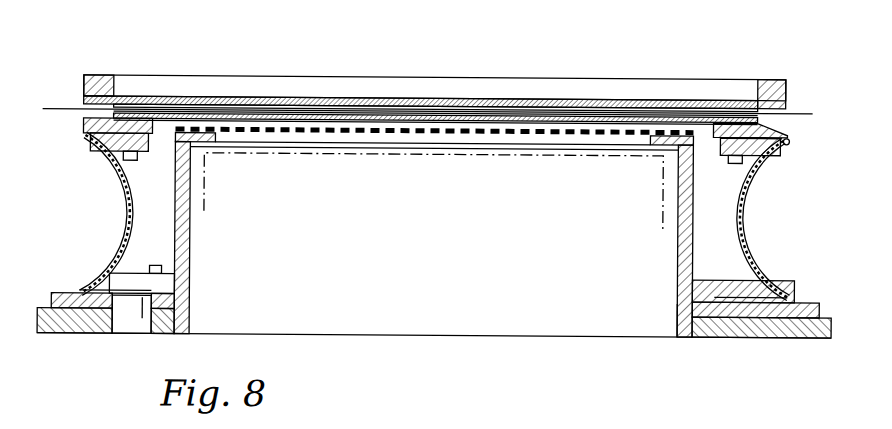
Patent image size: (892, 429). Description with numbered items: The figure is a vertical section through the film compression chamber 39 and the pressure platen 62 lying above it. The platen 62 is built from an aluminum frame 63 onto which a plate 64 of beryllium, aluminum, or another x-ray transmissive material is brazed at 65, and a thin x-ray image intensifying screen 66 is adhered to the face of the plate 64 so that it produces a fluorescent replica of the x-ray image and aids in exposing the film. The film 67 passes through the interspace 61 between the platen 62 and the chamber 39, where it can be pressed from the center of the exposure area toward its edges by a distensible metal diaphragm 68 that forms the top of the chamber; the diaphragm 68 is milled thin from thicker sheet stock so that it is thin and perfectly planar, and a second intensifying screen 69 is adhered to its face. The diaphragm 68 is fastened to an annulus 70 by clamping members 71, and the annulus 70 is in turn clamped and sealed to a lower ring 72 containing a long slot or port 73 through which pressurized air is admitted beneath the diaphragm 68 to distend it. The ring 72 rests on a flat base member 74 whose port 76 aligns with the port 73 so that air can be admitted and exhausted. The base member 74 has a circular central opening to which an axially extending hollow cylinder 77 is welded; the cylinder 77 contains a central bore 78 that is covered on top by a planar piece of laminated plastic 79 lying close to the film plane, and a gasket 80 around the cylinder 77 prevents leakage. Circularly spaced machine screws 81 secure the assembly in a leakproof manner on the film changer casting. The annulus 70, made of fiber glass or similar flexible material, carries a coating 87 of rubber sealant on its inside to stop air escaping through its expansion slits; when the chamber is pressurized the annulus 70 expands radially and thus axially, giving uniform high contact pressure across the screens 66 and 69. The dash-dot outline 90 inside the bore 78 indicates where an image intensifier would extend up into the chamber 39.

The film compression chamber 39 is at (447, 360).
The interspace 61 is at (100, 112).
The pressure platen 62 is at (437, 90).
The aluminum frame 63 is at (103, 75).
The plate 64 is at (668, 101).
The braze 65 is at (787, 101).
The x-ray image intensifying screen 66 is at (727, 104).
The film 67 is at (58, 80).
The distensible metal diaphragm 68 is at (522, 120).
The intensifying screen 69 is at (623, 120).
The annulus 70 is at (790, 139).
The clamping members 71 is at (718, 152).
The lower ring 72 is at (800, 298).
The port 73 is at (140, 333).
The flat base member 74 is at (720, 330).
The port 76 is at (130, 323).
The hollow cylinder 77 is at (690, 258).
The central bore 78 is at (678, 327).
The laminated plastic piece 79 is at (320, 132).
The gasket 80 is at (205, 133).
The machine screws 81 is at (162, 268).
The coating of rubber sealant 87 is at (742, 207).
The chamber outline 90 is at (433, 156).